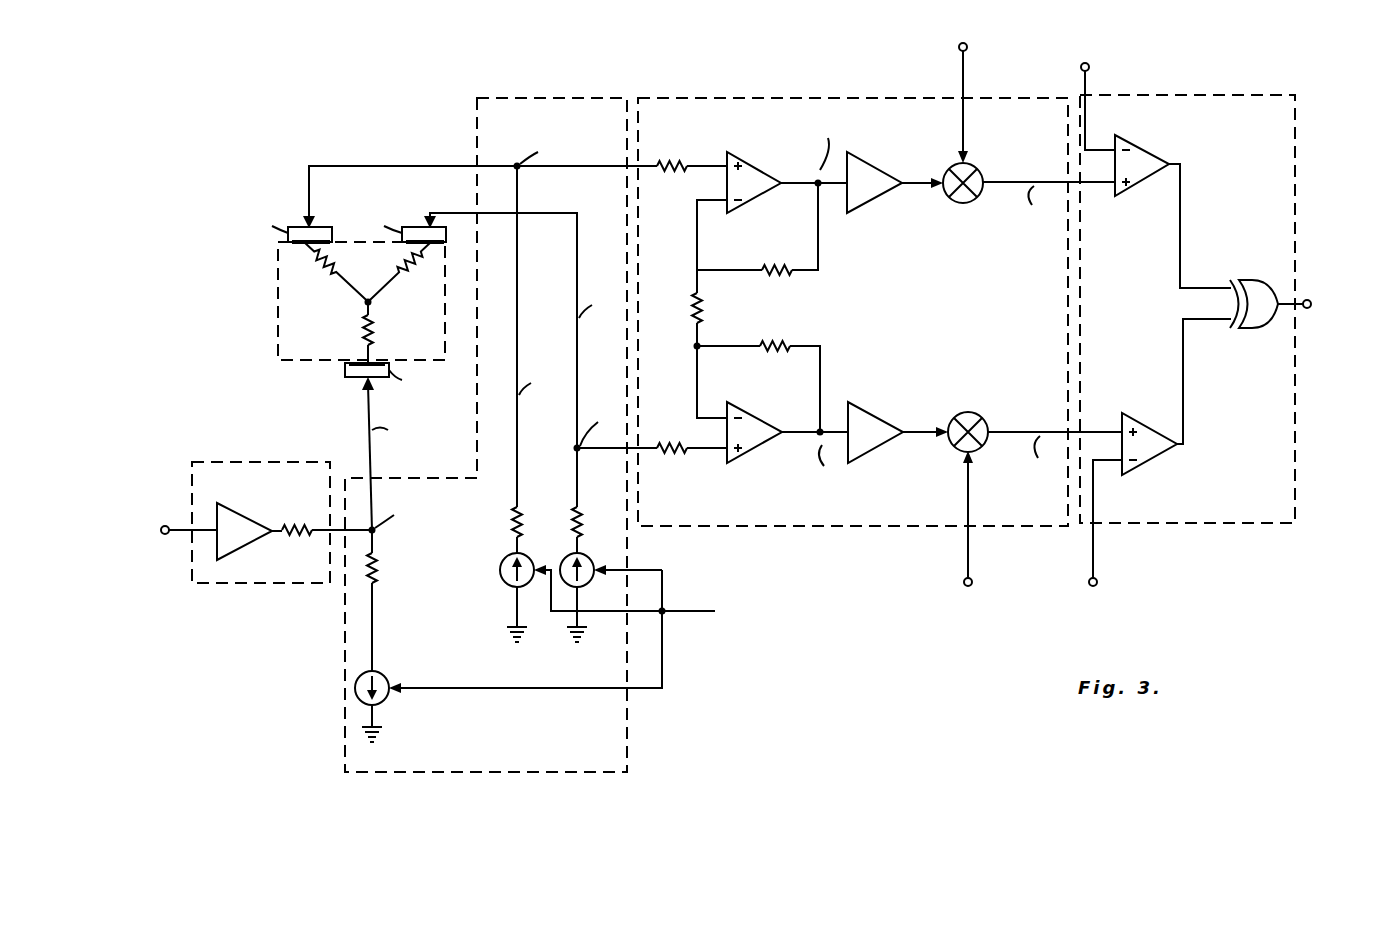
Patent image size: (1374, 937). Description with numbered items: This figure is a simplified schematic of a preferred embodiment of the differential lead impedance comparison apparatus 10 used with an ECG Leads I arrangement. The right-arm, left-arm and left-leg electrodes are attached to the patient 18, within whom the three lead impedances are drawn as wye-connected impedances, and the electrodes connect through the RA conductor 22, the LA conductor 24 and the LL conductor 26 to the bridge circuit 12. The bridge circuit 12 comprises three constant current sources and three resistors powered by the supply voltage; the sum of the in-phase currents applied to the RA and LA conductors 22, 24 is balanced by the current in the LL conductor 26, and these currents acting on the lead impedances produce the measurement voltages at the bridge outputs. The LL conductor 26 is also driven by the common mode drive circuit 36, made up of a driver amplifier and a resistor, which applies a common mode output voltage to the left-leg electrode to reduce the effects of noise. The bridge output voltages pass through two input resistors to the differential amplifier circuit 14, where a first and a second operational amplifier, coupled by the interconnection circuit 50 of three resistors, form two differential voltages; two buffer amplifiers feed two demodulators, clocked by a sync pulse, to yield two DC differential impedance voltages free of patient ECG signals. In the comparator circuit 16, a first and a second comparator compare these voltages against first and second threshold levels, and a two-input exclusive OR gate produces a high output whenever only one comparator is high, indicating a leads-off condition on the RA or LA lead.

The differential lead impedance comparison apparatus 10 is at (705, 70).
The bridge circuit 12 is at (570, 98).
The differential amplifier circuit 14 is at (790, 97).
The comparator circuit 16 is at (1180, 95).
The patient 18 is at (278, 298).
The RA conductor 22 is at (395, 166).
The LA conductor 24 is at (460, 213).
The LL conductor 26 is at (370, 450).
The common mode drive circuit 36 is at (266, 462).
The interconnection circuit 50 is at (818, 305).